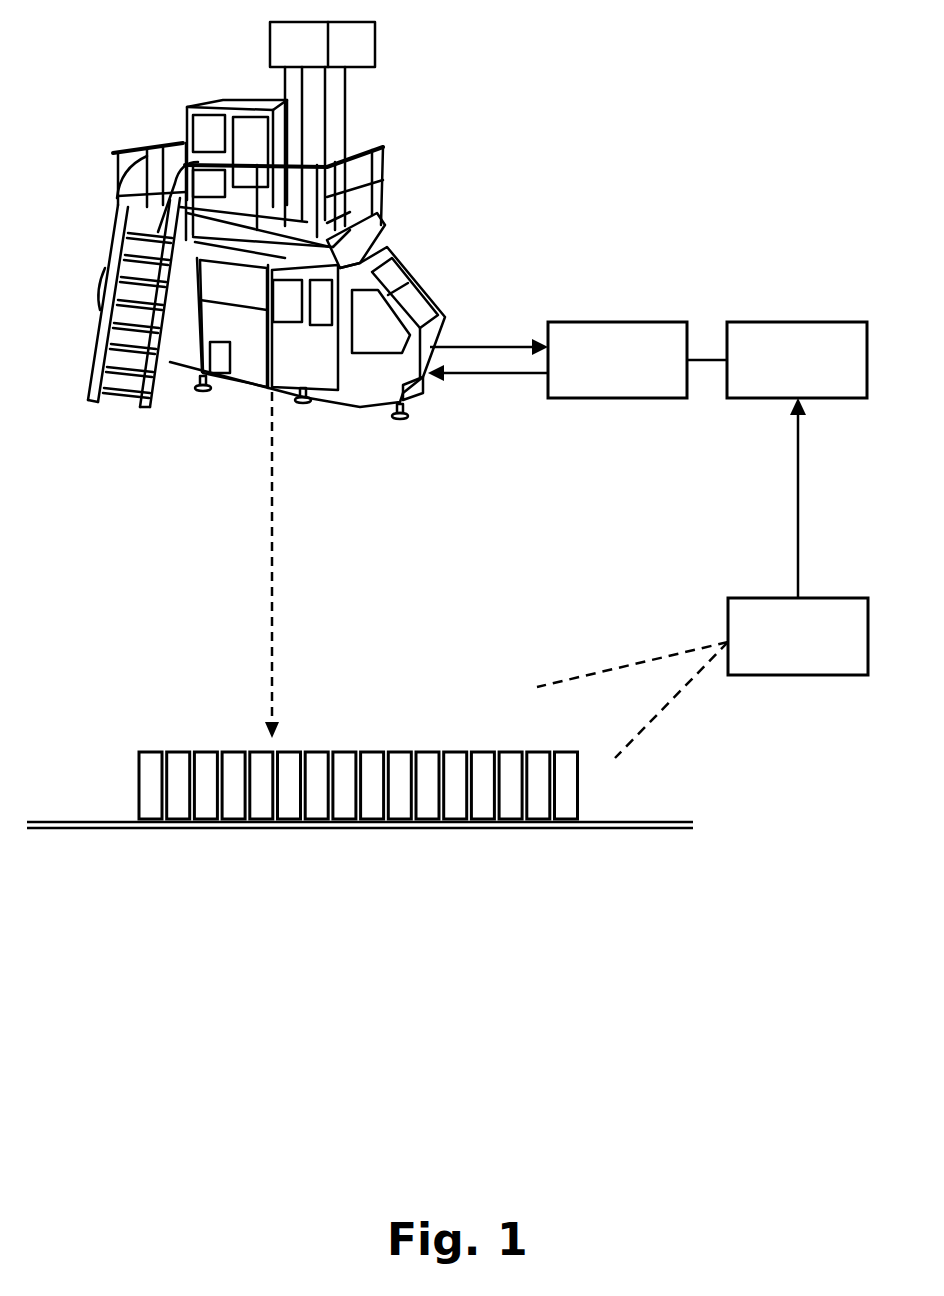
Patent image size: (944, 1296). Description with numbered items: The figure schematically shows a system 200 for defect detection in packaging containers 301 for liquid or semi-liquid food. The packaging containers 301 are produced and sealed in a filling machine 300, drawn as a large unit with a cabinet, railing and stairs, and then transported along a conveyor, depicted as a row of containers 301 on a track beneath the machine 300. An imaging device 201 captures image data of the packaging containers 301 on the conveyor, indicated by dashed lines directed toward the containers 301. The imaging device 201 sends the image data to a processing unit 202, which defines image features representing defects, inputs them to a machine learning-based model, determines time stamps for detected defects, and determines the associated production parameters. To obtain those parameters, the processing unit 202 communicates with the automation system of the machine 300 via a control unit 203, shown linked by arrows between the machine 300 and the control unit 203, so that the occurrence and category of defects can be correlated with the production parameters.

The filling machine 300 is at (490, 78).
The system for defect detection 200 is at (648, 484).
The imaging device 201 is at (798, 636).
The processing unit 202 is at (797, 360).
The control unit 203 is at (617, 360).
The packaging containers 301 is at (205, 752).